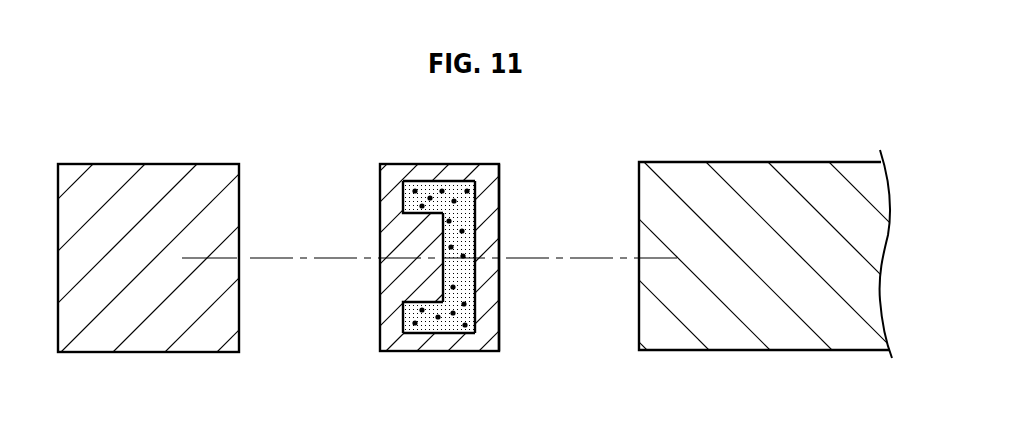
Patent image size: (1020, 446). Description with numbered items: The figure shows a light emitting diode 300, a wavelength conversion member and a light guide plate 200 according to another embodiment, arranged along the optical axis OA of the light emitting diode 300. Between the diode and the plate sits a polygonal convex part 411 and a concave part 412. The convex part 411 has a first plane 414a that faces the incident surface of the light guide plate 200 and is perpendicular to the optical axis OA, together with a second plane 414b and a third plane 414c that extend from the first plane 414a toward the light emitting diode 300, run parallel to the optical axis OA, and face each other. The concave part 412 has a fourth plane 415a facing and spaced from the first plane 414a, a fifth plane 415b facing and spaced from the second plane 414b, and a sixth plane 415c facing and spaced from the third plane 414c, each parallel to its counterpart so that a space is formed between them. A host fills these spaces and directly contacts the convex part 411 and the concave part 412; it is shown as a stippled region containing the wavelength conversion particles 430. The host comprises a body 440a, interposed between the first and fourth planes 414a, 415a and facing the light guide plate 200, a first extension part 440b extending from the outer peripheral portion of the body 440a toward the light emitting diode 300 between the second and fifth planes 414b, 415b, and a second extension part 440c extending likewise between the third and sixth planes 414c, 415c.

The light guide plate 200 is at (767, 325).
The light emitting diode 300 is at (147, 325).
The convex part 411 is at (412, 248).
The concave part 412 is at (488, 323).
The first plane 414a is at (413, 266).
The second plane 414b is at (413, 225).
The third plane 414c is at (416, 300).
The fourth plane 415a is at (476, 242).
The fifth plane 415b is at (462, 178).
The sixth plane 415c is at (464, 335).
The wavelength conversion particles 430 is at (467, 303).
The body 440a is at (465, 269).
The first extension part 440b is at (433, 186).
The second extension part 440c is at (437, 327).
The optical axis OA is at (431, 242).